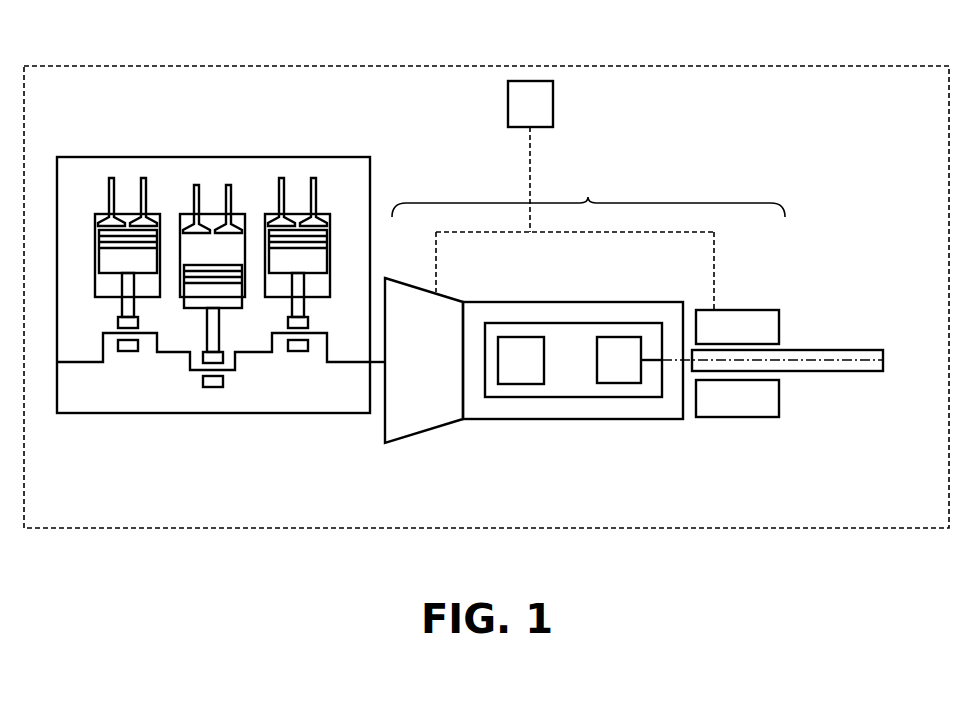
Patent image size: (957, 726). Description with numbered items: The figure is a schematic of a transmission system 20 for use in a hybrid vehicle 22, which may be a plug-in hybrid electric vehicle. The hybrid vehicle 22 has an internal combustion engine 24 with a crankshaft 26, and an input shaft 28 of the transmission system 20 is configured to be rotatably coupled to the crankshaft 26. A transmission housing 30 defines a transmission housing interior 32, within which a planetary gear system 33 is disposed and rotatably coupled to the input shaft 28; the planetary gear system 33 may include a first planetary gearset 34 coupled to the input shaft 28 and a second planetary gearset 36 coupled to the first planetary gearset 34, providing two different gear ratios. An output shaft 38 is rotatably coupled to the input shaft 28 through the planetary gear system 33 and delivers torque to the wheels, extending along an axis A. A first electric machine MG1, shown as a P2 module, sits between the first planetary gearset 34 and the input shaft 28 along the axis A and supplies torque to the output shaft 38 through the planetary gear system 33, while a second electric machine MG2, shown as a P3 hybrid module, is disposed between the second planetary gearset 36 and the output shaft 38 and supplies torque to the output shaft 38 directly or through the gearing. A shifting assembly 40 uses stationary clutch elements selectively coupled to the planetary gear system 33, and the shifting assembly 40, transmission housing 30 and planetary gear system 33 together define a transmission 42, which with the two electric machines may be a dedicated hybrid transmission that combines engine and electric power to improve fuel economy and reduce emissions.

The transmission system 20 is at (588, 197).
The hybrid vehicle 22 is at (107, 66).
The internal combustion engine 24 is at (213, 290).
The crankshaft 26 is at (337, 365).
The input shaft 28 is at (378, 366).
The transmission housing 30 is at (573, 406).
The transmission housing interior 32 is at (573, 416).
The planetary gear system 33 is at (573, 360).
The first planetary gearset 34 is at (521, 360).
The second planetary gearset 36 is at (629, 360).
The output shaft 38 is at (772, 401).
The shifting assembly 40 is at (726, 236).
The transmission 42 is at (664, 226).
The first electric machine MG1 is at (427, 390).
The second electric machine MG2 is at (730, 405).
The P2 module P2 is at (423, 423).
The P3 hybrid module P3 is at (737, 327).
The axis A is at (797, 360).